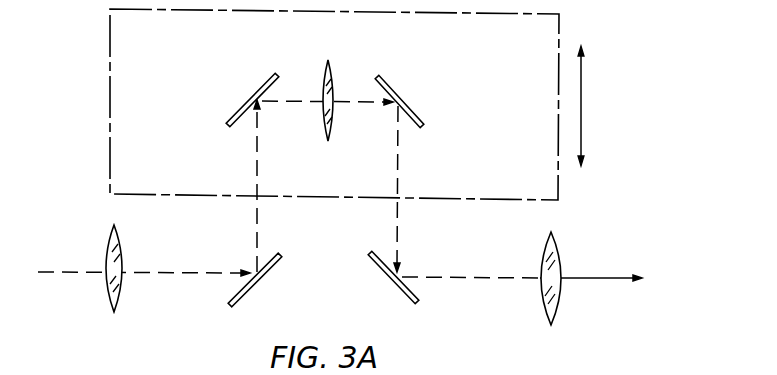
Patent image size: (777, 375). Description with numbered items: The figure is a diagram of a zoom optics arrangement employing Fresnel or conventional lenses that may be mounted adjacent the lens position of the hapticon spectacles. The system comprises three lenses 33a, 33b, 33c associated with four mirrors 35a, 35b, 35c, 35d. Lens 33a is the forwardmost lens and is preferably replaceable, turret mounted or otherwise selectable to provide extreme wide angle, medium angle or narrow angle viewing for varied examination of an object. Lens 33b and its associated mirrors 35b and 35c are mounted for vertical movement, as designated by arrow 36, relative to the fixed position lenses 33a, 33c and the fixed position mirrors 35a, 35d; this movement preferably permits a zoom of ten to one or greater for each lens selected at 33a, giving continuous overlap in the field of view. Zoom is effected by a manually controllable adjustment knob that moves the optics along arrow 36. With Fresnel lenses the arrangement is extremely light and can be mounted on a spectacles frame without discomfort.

The lens 33a is at (108, 280).
The lens 33b is at (336, 77).
The lens 33c is at (553, 262).
The mirror 35a is at (265, 276).
The mirror 35b is at (257, 93).
The mirror 35c is at (414, 108).
The mirror 35d is at (418, 297).
The arrow 36 is at (582, 107).